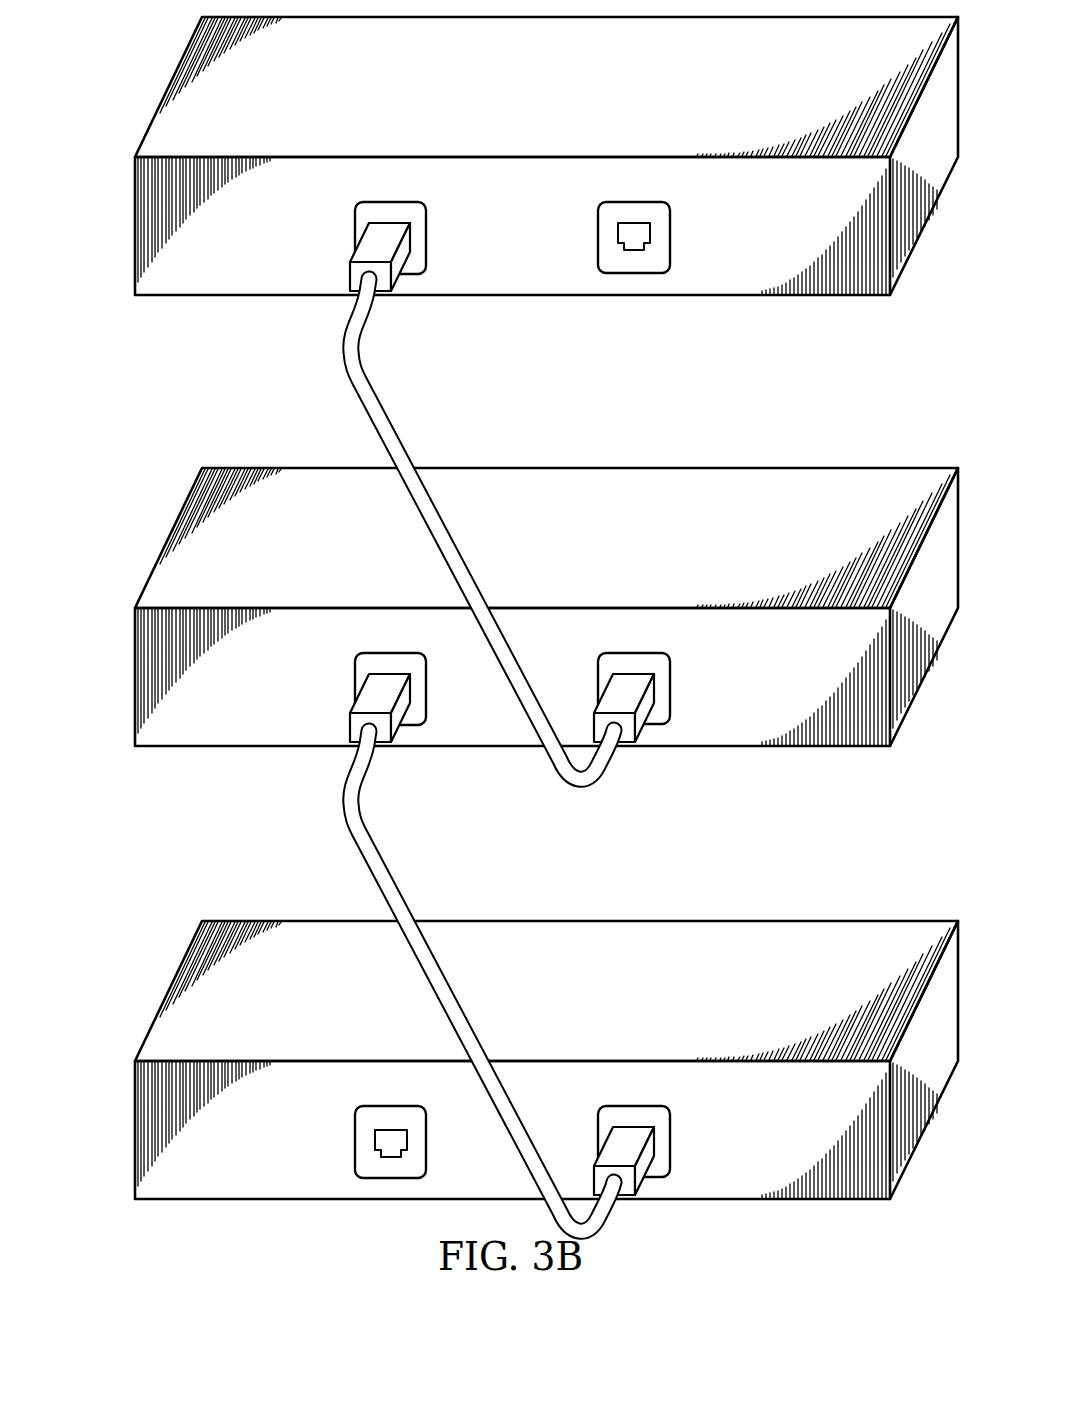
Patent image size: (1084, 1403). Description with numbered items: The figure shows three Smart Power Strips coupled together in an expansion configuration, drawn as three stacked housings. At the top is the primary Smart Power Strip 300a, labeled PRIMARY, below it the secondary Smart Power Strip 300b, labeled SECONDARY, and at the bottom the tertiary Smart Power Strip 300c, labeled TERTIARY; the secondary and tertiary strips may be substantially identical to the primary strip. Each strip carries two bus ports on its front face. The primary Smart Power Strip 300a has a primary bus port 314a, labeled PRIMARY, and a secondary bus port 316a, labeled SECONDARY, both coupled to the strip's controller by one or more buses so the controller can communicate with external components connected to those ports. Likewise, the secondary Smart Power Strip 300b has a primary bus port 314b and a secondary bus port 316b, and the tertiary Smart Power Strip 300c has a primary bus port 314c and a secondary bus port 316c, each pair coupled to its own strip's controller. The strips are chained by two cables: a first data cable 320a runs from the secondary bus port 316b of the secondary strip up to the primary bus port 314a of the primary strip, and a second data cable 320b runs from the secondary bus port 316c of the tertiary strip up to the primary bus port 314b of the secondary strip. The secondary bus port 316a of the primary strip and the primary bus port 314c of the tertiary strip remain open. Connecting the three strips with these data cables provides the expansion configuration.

The primary Smart Power Strip 300a is at (147, 98).
The secondary Smart Power Strip 300b is at (147, 549).
The tertiary Smart Power Strip 300c is at (146, 1003).
The primary bus port 314a is at (353, 238).
The primary bus port 314b is at (354, 690).
The primary bus port 314c is at (354, 1143).
The secondary bus port 316a is at (670, 238).
The secondary bus port 316b is at (671, 690).
The secondary bus port 316c is at (671, 1142).
The first data cable 320a is at (356, 398).
The second data cable 320b is at (357, 846).